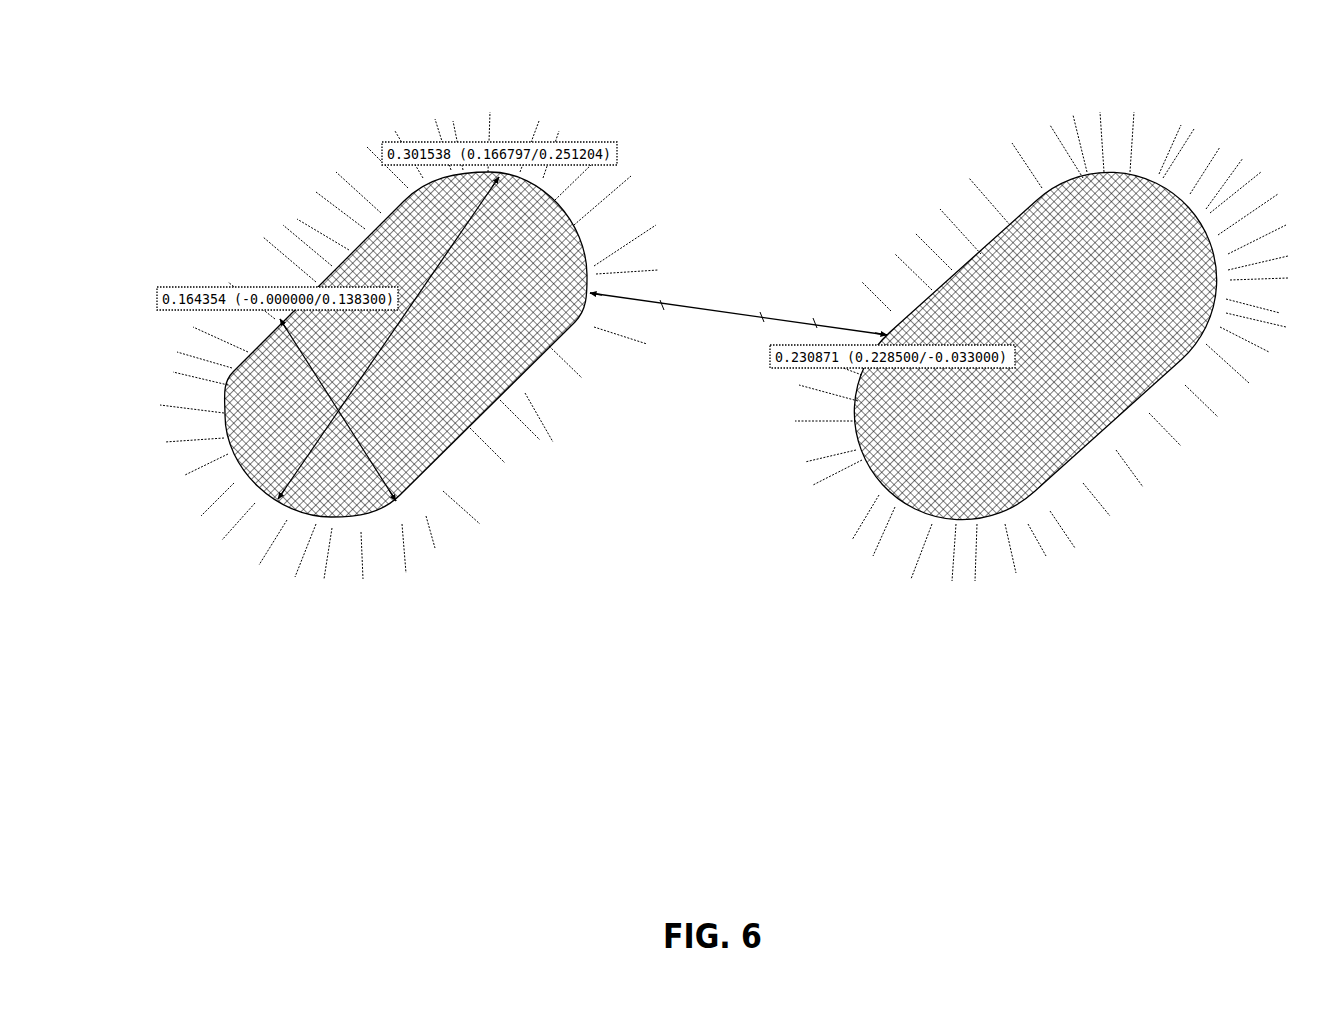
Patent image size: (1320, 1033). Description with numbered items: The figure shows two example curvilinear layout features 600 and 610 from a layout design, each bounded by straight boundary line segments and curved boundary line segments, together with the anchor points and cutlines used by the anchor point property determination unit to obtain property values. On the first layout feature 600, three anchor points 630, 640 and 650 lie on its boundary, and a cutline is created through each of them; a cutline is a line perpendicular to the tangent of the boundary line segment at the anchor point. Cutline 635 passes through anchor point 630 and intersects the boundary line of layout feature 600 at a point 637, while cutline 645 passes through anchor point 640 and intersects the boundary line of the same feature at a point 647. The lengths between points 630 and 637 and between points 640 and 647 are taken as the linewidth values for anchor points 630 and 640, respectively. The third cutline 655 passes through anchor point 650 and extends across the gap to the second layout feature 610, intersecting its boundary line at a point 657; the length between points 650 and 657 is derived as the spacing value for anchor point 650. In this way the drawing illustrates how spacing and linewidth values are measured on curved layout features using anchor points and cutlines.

The curvilinear layout feature 600 is at (264, 136).
The curvilinear layout feature 610 is at (930, 124).
The anchor point 630 is at (414, 501).
The cutline 635 is at (360, 431).
The intersection point 637 is at (302, 328).
The anchor point 640 is at (261, 502).
The cutline 645 is at (413, 319).
The intersection point 647 is at (504, 190).
The anchor point 650 is at (603, 311).
The cutline 655 is at (763, 310).
The intersection point 657 is at (879, 323).